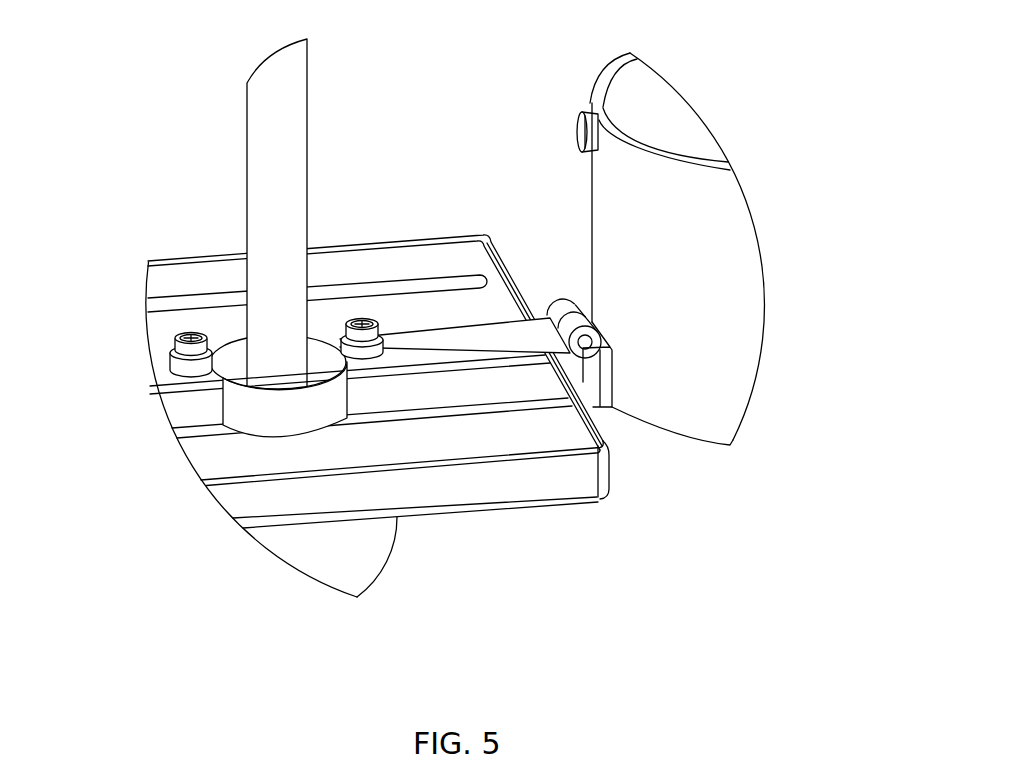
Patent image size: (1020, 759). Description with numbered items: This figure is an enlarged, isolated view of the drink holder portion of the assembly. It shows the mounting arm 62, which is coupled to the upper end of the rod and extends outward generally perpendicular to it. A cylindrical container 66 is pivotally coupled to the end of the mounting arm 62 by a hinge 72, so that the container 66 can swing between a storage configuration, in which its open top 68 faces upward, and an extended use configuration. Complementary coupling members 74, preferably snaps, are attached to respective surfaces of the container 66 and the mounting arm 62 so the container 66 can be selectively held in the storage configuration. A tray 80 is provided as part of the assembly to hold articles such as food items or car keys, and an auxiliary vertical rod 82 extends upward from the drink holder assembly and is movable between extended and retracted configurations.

The mounting arm 62 is at (470, 337).
The cylindrical container 66 is at (723, 223).
The open top 68 is at (660, 107).
The hinge 72 is at (561, 300).
The coupling members having complementary configurations 74 is at (174, 351).
The tray 80 is at (407, 236).
The auxiliary vertical rod 82 is at (297, 87).